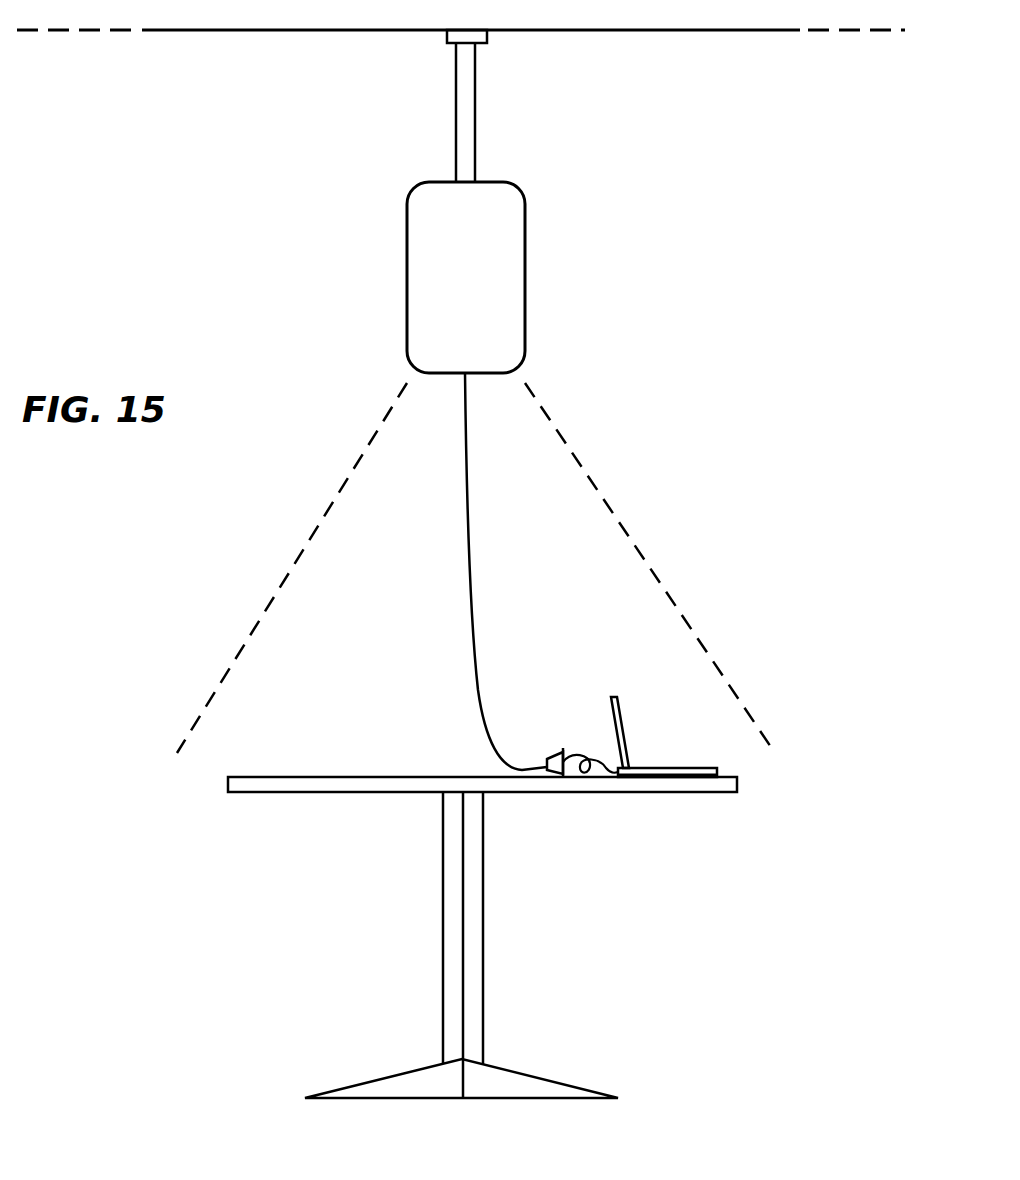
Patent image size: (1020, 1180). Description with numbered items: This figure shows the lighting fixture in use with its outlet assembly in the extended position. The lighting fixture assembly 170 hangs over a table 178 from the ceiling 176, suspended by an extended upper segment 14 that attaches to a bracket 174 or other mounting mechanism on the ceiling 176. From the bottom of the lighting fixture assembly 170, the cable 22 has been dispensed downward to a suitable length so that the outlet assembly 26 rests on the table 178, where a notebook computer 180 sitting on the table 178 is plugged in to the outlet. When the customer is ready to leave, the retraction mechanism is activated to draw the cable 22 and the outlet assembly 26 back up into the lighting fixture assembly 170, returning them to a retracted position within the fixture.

The extended upper segment 14 is at (475, 135).
The cable 22 is at (467, 562).
The outlet assembly 26 is at (557, 758).
The lighting fixture assembly 170 is at (525, 230).
The bracket 174 is at (452, 40).
The ceiling 176 is at (580, 35).
The table 178 is at (343, 777).
The notebook computer 180 is at (683, 768).